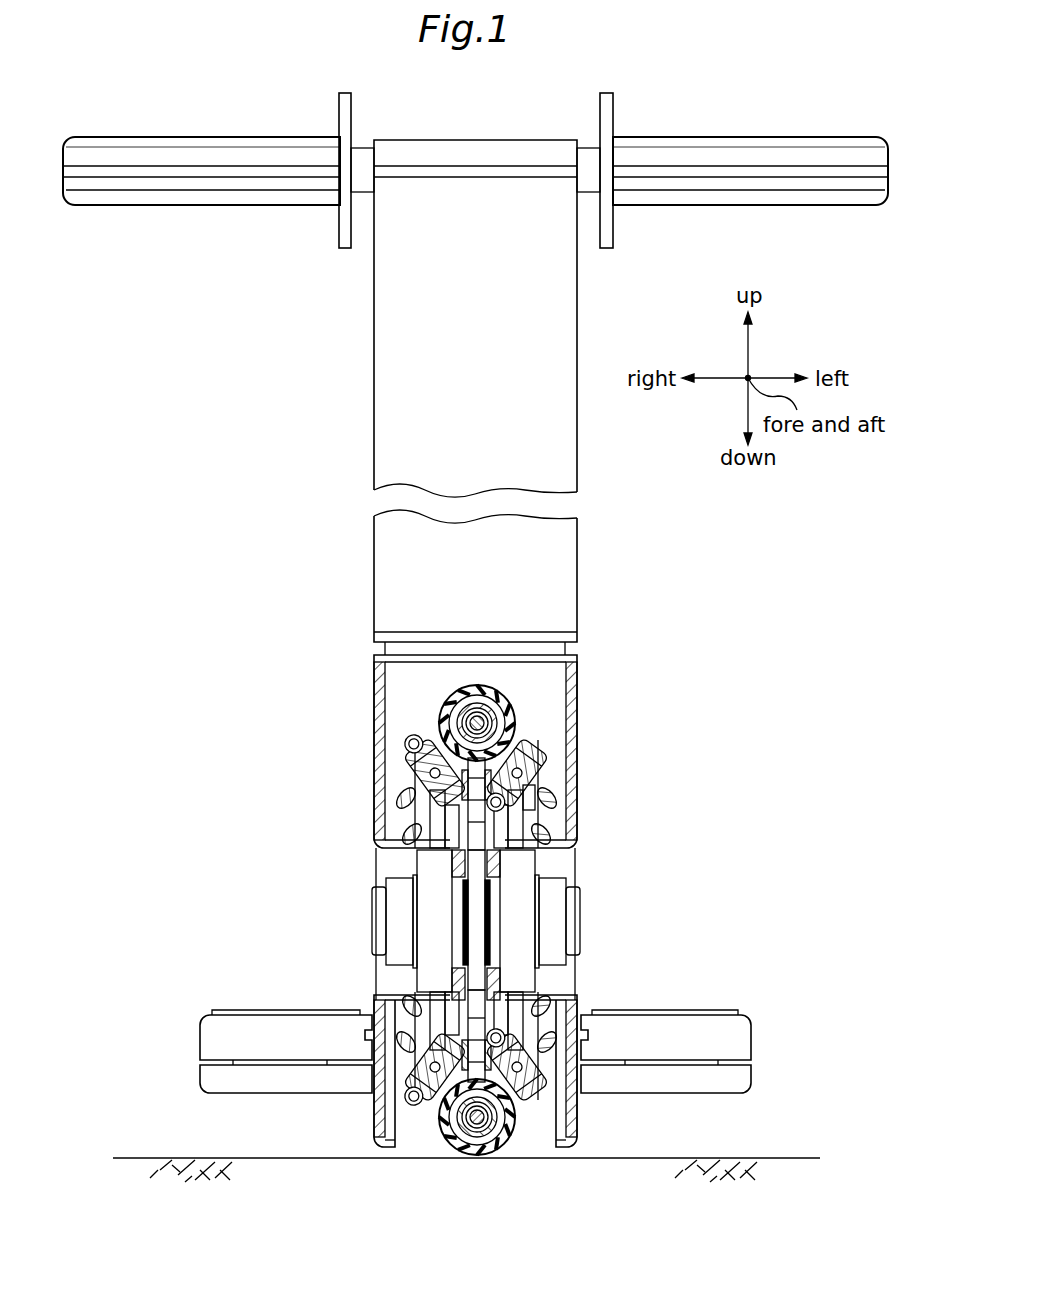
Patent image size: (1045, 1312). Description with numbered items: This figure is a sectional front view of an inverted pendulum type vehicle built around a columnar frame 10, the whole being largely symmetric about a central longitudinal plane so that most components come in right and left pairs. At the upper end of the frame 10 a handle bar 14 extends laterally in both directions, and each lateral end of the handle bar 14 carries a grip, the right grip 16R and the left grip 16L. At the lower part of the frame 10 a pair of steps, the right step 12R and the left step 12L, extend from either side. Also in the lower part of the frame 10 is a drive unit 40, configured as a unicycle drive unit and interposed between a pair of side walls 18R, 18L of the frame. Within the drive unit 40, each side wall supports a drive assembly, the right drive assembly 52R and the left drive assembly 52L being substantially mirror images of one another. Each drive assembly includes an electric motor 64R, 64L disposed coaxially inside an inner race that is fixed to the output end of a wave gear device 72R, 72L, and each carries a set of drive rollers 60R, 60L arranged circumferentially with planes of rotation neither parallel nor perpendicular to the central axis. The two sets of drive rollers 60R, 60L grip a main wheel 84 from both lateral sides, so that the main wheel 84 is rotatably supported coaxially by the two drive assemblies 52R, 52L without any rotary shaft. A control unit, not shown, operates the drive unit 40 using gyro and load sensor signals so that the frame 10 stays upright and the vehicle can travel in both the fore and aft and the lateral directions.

The columnar frame 10 is at (586, 613).
The right step 12R is at (258, 1023).
The left step 12L is at (693, 1023).
The handle bar 14 is at (590, 150).
The right grip 16R is at (199, 150).
The left grip 16L is at (742, 150).
The right side wall 18R is at (378, 770).
The left side wall 18L is at (575, 781).
The drive unit 40 is at (472, 749).
The right drive assembly 52R is at (412, 791).
The left drive assembly 52L is at (546, 790).
The right drive roller 60R is at (428, 1110).
The left drive roller 60L is at (542, 773).
The right electric motor 64R is at (421, 897).
The left electric motor 64L is at (533, 898).
The right wave gear device 72R is at (462, 935).
The left wave gear device 72L is at (490, 935).
The main wheel 84 is at (509, 690).